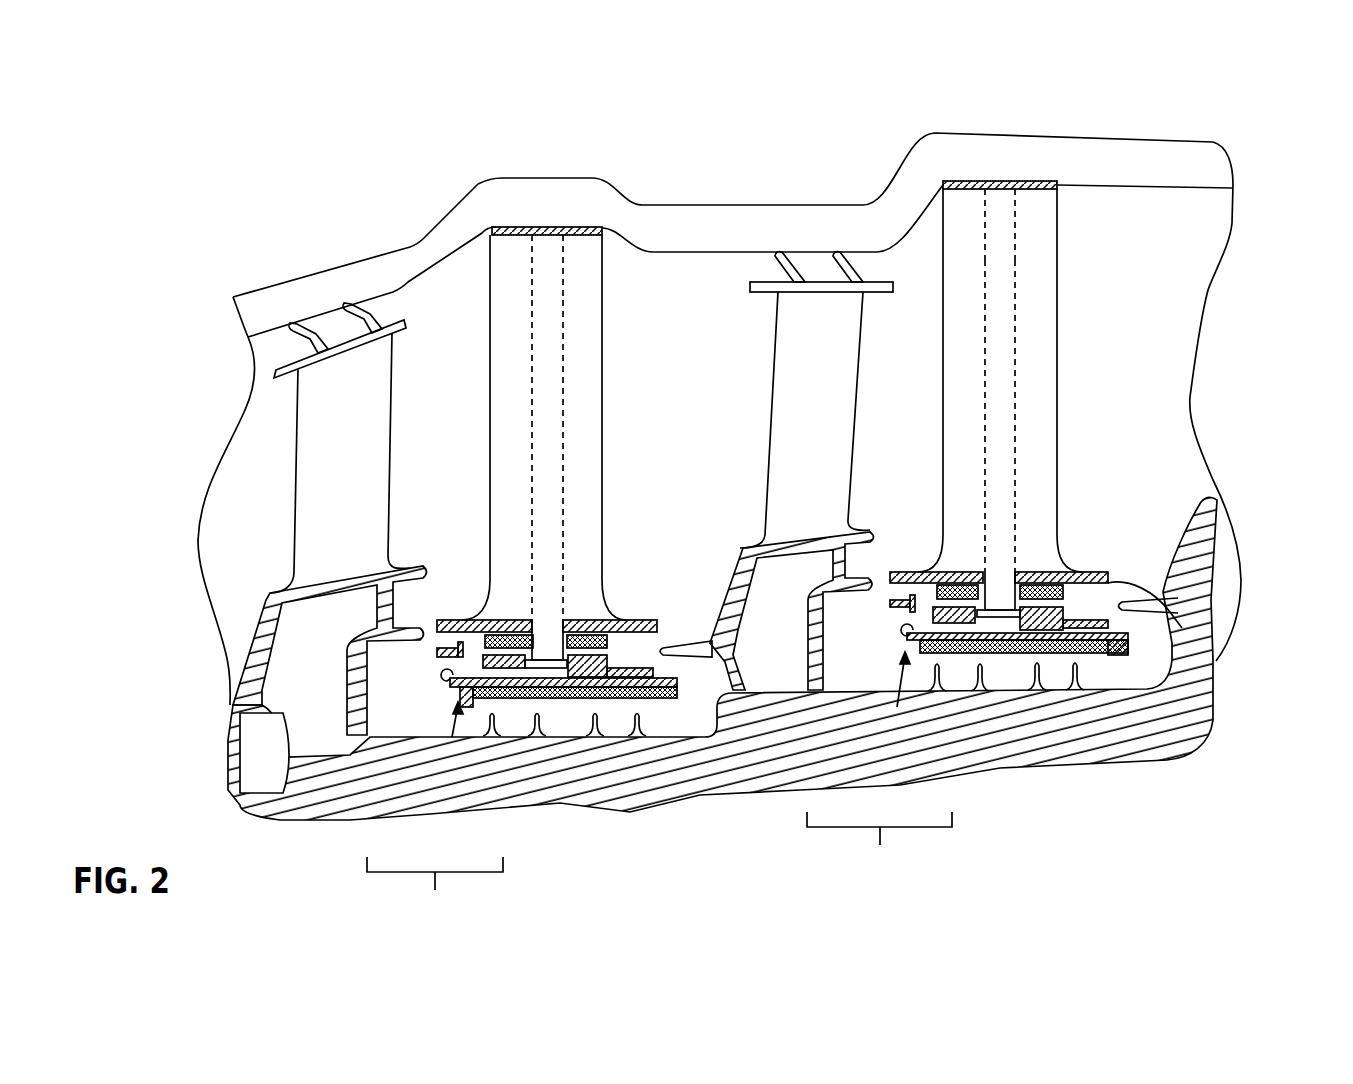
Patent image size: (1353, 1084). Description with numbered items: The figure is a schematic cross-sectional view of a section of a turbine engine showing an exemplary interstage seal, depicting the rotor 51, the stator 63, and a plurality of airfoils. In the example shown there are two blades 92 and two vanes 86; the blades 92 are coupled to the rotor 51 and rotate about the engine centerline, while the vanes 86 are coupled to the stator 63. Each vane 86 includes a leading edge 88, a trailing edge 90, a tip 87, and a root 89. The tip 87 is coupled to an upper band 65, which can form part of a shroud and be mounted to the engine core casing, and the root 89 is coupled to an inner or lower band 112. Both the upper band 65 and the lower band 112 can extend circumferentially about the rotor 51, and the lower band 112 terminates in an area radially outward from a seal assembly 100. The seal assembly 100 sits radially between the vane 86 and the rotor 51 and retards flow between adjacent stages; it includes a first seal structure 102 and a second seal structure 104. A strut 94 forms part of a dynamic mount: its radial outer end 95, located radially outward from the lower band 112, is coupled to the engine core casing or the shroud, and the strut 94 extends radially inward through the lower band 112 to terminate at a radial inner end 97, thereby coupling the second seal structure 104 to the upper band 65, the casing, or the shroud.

The rotor 51 is at (1207, 723).
The stator 63 is at (467, 220).
The upper band 65 is at (508, 224).
The vane 86 is at (603, 498).
The tip 87 is at (623, 237).
The leading edge 88 is at (490, 317).
The root 89 is at (613, 678).
The trailing edge 90 is at (1170, 152).
The blade 92 is at (356, 476).
The strut 94 is at (565, 433).
The radial outer end 95 is at (548, 232).
The radial inner end 97 is at (548, 668).
The seal assembly 100 is at (659, 866).
The first seal structure 102 is at (540, 702).
The second seal structure 104 is at (452, 737).
The lower band 112 is at (667, 688).